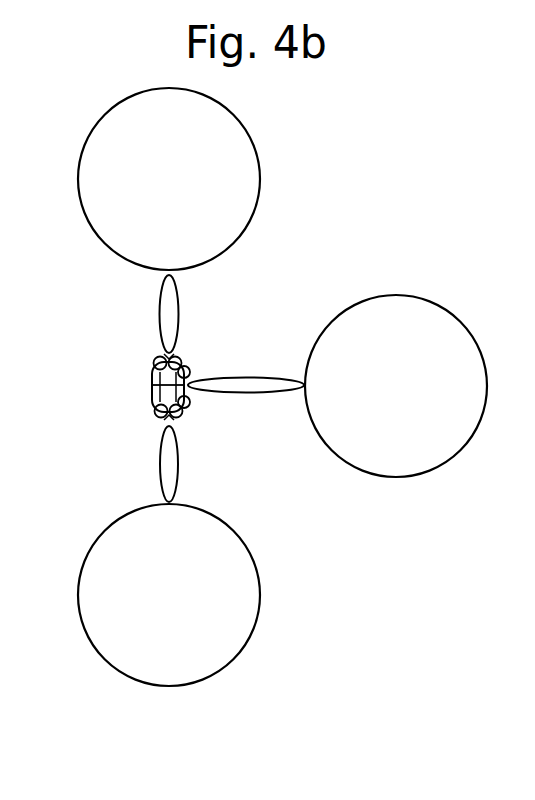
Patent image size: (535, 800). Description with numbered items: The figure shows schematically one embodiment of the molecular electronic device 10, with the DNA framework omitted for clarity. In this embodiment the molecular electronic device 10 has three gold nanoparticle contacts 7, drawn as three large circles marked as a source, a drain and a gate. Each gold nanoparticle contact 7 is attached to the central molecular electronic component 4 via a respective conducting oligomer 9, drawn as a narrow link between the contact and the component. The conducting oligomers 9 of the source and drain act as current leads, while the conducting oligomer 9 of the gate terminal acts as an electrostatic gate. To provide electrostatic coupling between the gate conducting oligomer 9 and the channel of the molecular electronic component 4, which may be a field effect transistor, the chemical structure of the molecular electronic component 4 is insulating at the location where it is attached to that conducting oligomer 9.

The molecular electronic device 10 is at (338, 168).
The gold nanoparticle contact 7 is at (112, 213).
The conducting oligomer 9 is at (168, 313).
The molecular electronic component 4 is at (150, 385).